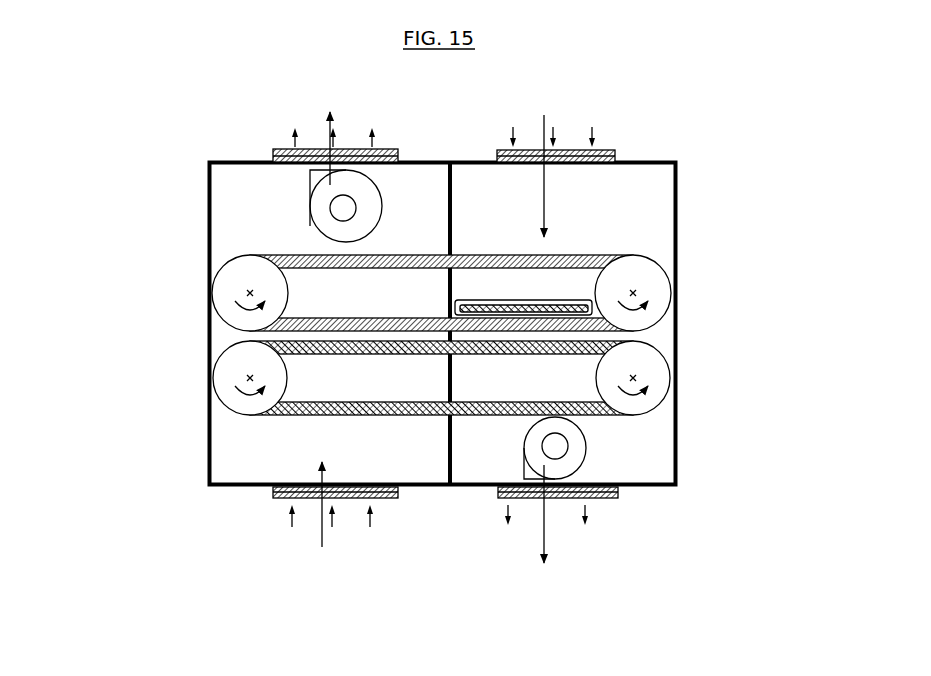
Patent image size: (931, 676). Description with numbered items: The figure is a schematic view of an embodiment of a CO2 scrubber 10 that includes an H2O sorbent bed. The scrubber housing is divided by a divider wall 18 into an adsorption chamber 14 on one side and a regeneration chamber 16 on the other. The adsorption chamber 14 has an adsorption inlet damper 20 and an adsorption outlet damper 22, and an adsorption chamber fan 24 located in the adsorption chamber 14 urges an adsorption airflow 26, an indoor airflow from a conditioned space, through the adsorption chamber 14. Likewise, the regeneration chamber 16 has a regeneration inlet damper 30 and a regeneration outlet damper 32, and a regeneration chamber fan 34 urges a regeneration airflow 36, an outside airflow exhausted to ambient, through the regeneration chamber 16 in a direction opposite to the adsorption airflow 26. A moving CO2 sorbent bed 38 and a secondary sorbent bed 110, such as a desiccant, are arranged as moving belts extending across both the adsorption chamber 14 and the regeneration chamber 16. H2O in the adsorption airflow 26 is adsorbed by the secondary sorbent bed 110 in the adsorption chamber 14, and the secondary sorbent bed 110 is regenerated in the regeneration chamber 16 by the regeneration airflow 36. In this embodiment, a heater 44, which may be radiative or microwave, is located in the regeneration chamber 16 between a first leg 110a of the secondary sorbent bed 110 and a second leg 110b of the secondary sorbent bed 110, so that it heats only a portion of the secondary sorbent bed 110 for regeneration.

The CO2 scrubber 10 is at (155, 138).
The adsorption chamber 14 is at (381, 461).
The regeneration chamber 16 is at (508, 227).
The divider wall 18 is at (440, 443).
The adsorption inlet damper 20 is at (270, 492).
The adsorption outlet damper 22 is at (273, 150).
The adsorption chamber fan 24 is at (328, 232).
The adsorption airflow 26 is at (328, 140).
The regeneration inlet damper 30 is at (497, 150).
The regeneration outlet damper 32 is at (613, 497).
The regeneration chamber fan 34 is at (541, 462).
The regeneration airflow 36 is at (547, 133).
The CO2 sorbent bed 38 is at (333, 298).
The heater 44 is at (505, 312).
The secondary sorbent bed 110 is at (460, 303).
The first leg of the secondary sorbent bed 110a is at (585, 260).
The second leg of the secondary sorbent bed 110b is at (598, 327).